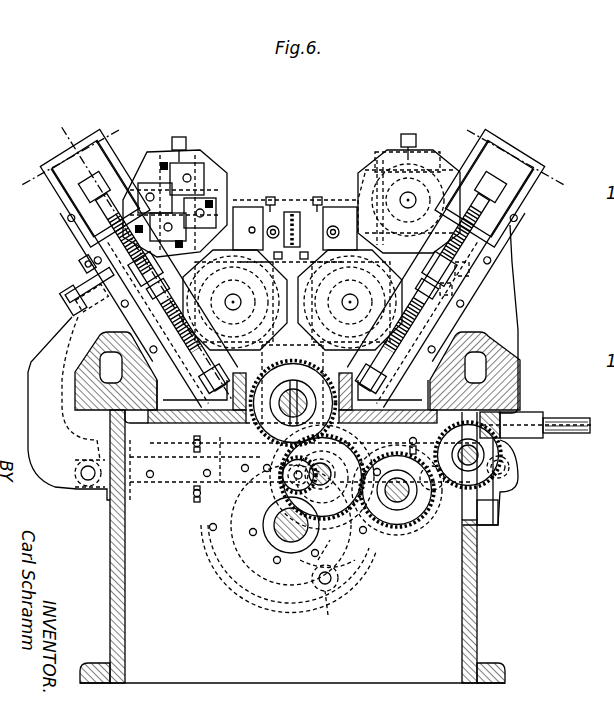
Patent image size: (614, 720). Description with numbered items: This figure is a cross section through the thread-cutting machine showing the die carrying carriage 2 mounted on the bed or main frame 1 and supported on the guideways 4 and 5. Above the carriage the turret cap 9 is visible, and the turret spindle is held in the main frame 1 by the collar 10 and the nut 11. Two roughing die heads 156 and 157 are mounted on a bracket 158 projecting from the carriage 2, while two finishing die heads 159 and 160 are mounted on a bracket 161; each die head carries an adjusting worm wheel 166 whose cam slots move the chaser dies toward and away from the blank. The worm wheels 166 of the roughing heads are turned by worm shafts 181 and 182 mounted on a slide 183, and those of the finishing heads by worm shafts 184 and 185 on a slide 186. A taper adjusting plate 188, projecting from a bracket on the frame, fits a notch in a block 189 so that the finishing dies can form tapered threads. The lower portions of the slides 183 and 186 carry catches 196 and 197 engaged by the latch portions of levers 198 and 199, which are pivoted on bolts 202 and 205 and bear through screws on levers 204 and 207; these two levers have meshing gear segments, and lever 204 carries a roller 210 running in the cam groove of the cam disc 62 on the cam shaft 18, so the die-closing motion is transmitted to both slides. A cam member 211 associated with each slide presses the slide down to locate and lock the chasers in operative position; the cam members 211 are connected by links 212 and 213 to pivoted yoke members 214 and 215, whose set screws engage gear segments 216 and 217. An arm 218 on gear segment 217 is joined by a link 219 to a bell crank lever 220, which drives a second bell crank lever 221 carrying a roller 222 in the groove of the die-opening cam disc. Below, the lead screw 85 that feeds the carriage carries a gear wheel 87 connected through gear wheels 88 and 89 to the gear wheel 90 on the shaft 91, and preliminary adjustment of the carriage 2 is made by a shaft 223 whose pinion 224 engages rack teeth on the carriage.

The bed or main frame 1 is at (477, 596).
The carriage 2 is at (520, 397).
The guideway 4 is at (112, 383).
The guideway 5 is at (477, 383).
The turret cap 9 is at (119, 130).
The collar 10 is at (470, 130).
The nut 11 is at (63, 126).
The cam shaft 18 is at (258, 591).
The cam disc 62 is at (329, 616).
The lead screw 85 is at (297, 452).
The gear wheel 87 is at (300, 364).
The gear wheel 88 is at (356, 520).
The gear wheel 89 is at (417, 524).
The gear wheel 90 is at (497, 503).
The shaft 91 is at (442, 490).
The roughing die head 156 is at (382, 146).
The roughing die head 157 is at (388, 148).
The bracket 158 is at (511, 255).
The finishing die head 159 is at (238, 143).
The finishing die head 160 is at (230, 255).
The bracket 161 is at (97, 290).
The adjusting worm wheel 166 is at (160, 150).
The worm shaft 181 is at (417, 320).
The worm shaft 182 is at (513, 213).
The slide 183 is at (503, 177).
The worm shaft 184 is at (100, 217).
The worm shaft 185 is at (152, 412).
The slide 186 is at (68, 152).
The taper adjusting plate 188 is at (67, 307).
The block 189 is at (88, 265).
The catch 196 is at (322, 477).
The catch 197 is at (300, 459).
The lever 198 is at (468, 452).
The lever 199 is at (183, 464).
The bolt 202 is at (512, 478).
The lever 204 is at (430, 514).
The bolt 205 is at (80, 497).
The lever 207 is at (177, 490).
The roller 210 is at (287, 525).
The cam member 211 is at (452, 290).
The link 212 is at (235, 300).
The link 213 is at (350, 300).
The yoke member 214 is at (262, 195).
The yoke member 215 is at (298, 210).
The gear segment 216 is at (268, 212).
The gear segment 217 is at (293, 212).
The arm 218 is at (326, 207).
The link 219 is at (365, 173).
The bell crank lever 220 is at (468, 270).
The bell crank lever 221 is at (423, 438).
The roller 222 is at (351, 594).
The shaft 223 is at (547, 412).
The pinion 224 is at (512, 458).